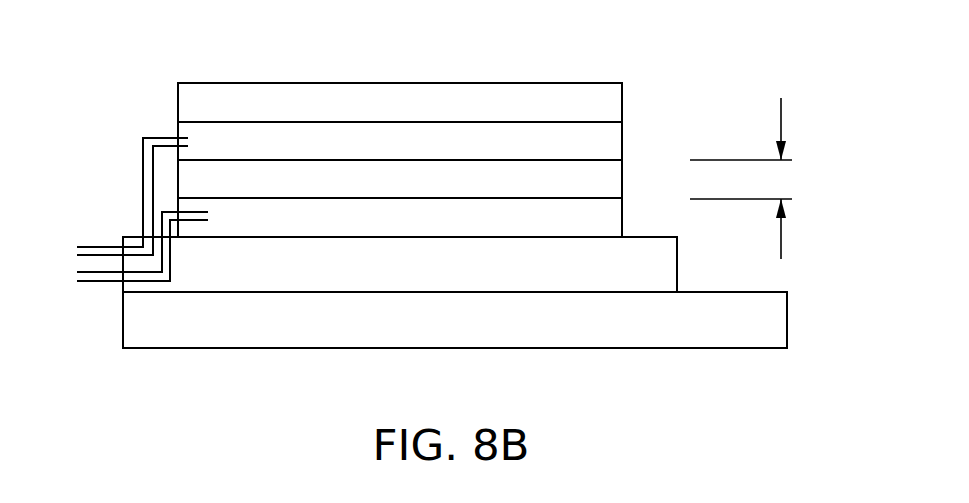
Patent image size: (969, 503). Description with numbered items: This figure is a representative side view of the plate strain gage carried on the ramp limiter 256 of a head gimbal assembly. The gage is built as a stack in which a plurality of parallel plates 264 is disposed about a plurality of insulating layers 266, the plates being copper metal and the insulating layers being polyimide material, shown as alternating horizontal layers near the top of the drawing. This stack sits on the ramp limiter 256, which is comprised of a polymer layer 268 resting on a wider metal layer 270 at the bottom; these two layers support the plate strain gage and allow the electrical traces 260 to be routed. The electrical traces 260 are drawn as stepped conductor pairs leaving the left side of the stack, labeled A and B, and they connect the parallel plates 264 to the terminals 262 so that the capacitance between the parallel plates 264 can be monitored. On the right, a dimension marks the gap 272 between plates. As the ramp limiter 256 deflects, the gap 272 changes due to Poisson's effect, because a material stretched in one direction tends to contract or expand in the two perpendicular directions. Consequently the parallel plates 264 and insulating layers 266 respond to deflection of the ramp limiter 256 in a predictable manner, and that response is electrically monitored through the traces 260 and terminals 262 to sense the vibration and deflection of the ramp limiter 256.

The ramp limiter 256 is at (772, 395).
The electrical traces 260 is at (118, 254).
The terminals 262 is at (118, 254).
The parallel plates 264 is at (178, 132).
The insulating layers 266 is at (540, 82).
The polymer layer 268 is at (677, 277).
The metal layer 270 is at (788, 320).
The gap 272 is at (745, 178).
The lead A is at (120, 200).
The lead B is at (130, 251).